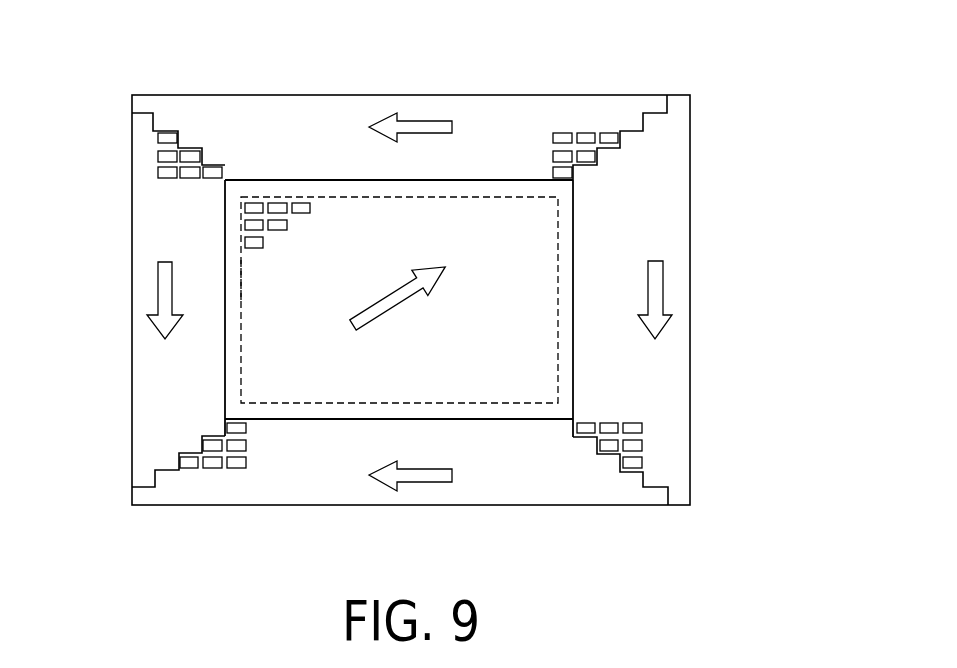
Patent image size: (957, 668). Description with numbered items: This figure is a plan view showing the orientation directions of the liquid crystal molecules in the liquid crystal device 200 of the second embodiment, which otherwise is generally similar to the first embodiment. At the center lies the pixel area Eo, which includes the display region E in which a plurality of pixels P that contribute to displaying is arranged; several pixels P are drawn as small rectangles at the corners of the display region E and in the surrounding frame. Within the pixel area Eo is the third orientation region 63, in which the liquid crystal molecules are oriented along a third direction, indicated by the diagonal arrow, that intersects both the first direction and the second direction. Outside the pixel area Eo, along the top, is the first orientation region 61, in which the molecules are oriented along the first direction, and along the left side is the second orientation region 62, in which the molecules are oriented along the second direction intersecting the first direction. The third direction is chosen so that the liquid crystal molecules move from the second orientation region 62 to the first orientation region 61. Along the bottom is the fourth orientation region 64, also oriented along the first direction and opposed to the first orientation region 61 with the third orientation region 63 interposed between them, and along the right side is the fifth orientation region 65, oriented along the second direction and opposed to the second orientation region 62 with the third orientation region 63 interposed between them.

The liquid crystal device 200 is at (762, 32).
The first orientation region 61 is at (480, 135).
The second orientation region 62 is at (160, 203).
The third orientation region 63 is at (523, 383).
The fourth orientation region 64 is at (327, 465).
The fifth orientation region 65 is at (653, 223).
The display region E is at (524, 198).
The pixel area Eo is at (328, 235).
The pixel P is at (587, 138).